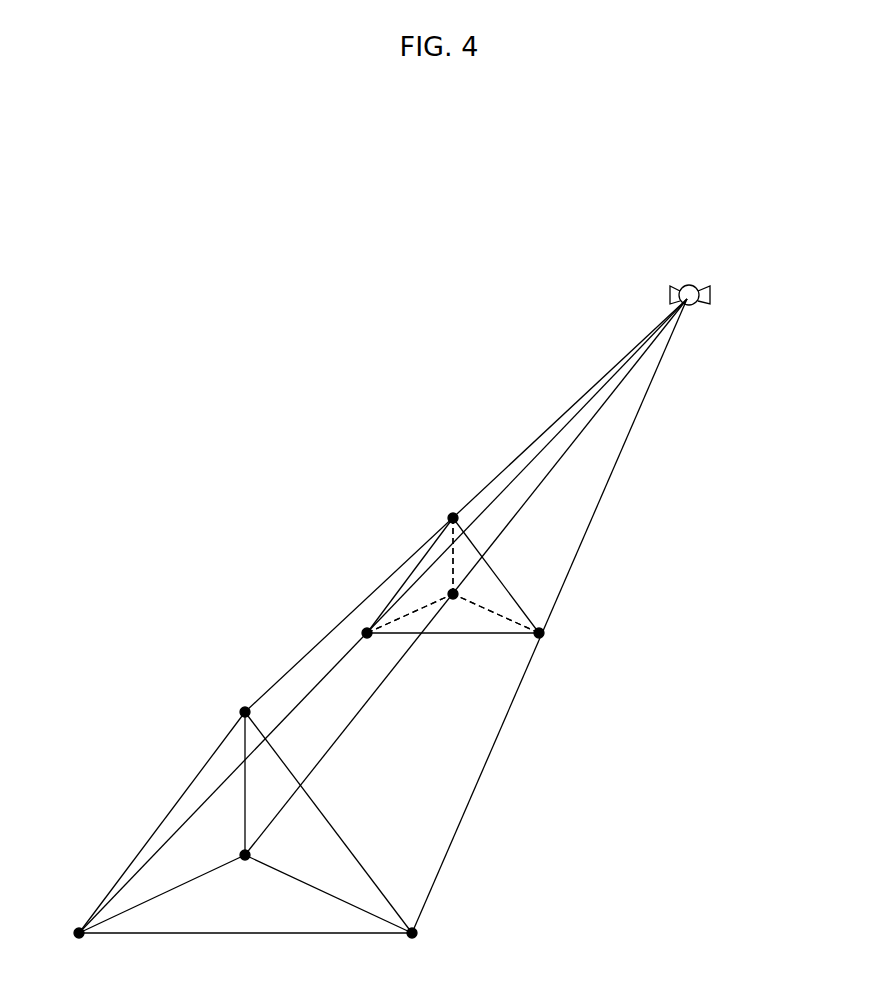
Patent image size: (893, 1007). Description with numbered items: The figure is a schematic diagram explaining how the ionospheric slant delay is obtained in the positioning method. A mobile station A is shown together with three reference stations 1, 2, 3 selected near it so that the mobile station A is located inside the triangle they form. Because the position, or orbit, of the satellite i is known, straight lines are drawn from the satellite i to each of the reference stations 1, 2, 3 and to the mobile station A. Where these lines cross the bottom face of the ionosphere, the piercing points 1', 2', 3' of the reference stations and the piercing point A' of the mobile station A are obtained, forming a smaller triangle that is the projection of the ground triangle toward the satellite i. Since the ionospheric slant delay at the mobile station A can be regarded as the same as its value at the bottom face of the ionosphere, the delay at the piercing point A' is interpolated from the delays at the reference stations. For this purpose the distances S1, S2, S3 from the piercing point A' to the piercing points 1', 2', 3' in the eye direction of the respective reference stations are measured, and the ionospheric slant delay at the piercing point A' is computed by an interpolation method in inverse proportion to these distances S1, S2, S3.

The satellite i is at (711, 296).
The reference station 1 is at (244, 696).
The reference station 2 is at (64, 933).
The reference station 3 is at (426, 933).
The mobile station A is at (245, 869).
The piercing point 1' is at (454, 501).
The piercing point 2' is at (353, 639).
The piercing point 3' is at (561, 640).
The piercing point of the mobile station A' is at (451, 606).
The distance S1 is at (450, 573).
The distance S2 is at (381, 622).
The distance S3 is at (496, 612).